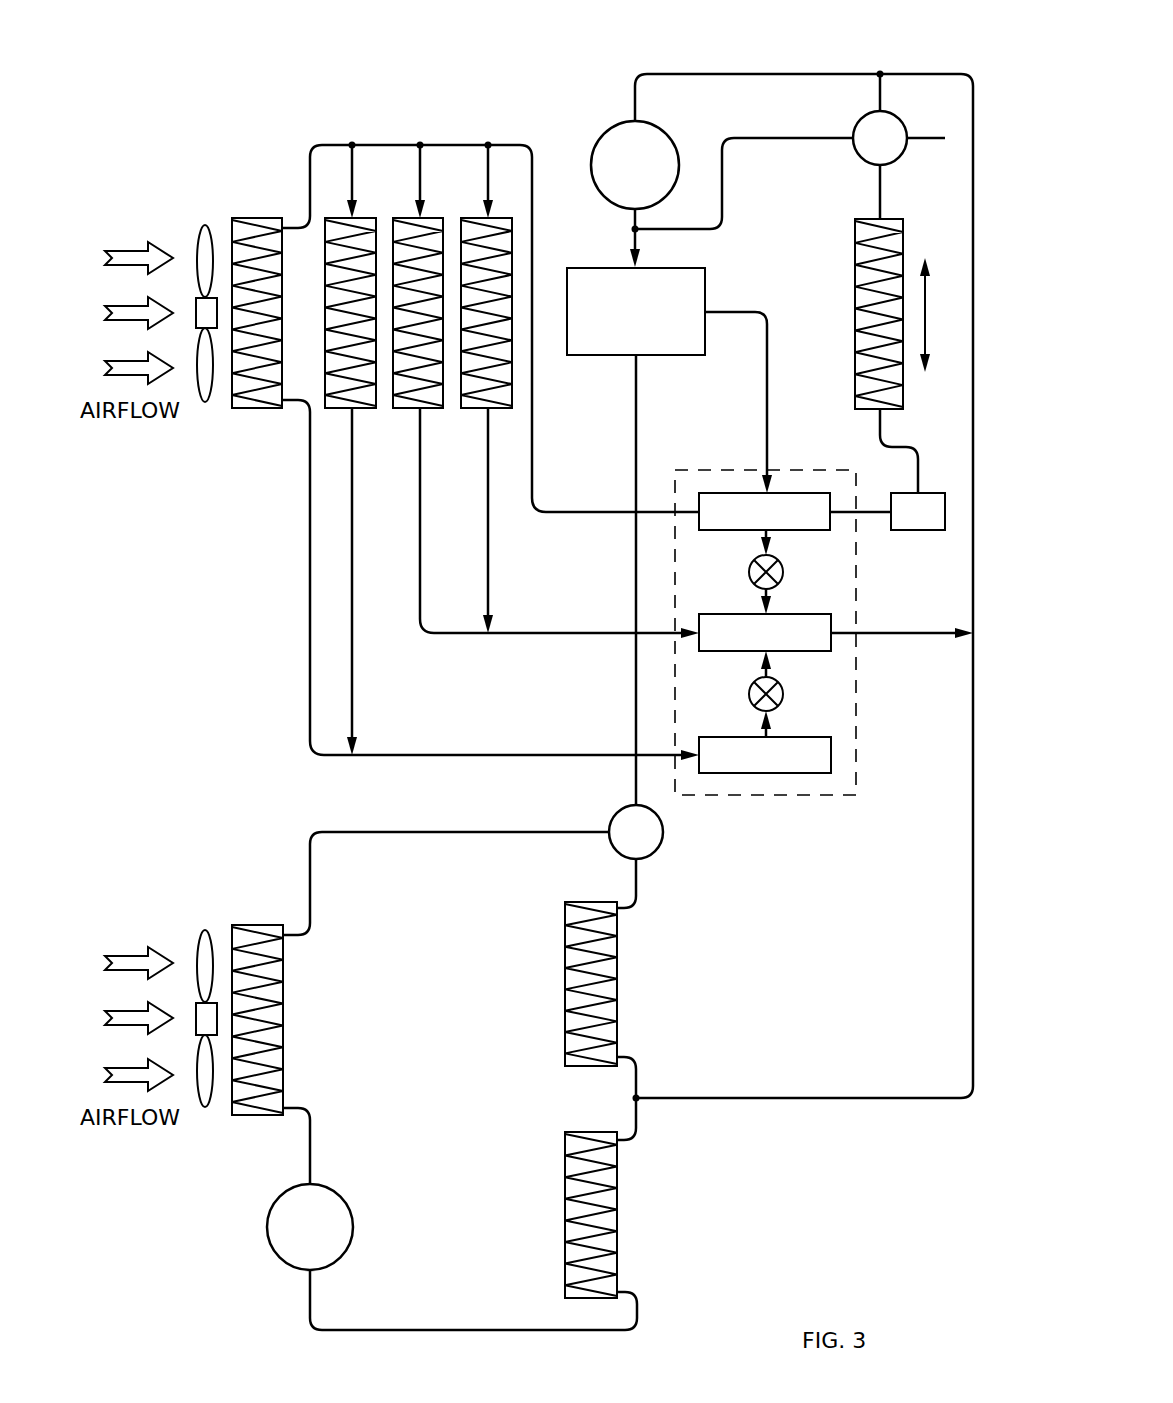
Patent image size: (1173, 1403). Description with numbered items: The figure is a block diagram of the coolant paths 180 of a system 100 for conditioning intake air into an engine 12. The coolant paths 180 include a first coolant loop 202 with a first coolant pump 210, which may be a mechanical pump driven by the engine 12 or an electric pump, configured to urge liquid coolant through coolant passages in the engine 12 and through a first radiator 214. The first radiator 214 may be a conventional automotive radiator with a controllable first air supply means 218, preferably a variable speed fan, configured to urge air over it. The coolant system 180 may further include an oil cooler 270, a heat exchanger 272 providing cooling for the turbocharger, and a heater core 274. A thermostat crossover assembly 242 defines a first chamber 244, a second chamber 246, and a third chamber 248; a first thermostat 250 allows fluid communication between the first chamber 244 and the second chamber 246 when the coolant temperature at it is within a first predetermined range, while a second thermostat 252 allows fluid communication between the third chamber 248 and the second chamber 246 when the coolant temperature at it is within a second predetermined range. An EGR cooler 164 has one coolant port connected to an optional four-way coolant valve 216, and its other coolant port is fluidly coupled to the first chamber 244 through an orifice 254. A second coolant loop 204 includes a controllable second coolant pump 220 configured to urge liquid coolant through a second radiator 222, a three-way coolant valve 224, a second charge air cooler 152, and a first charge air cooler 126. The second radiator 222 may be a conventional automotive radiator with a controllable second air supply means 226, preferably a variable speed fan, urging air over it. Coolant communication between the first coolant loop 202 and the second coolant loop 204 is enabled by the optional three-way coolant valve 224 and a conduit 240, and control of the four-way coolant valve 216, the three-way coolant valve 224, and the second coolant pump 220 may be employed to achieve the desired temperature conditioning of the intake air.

The engine 12 is at (588, 268).
The system for conditioning intake air 100 is at (308, 60).
The first charge air cooler 126 is at (618, 1272).
The second charge air cooler 152 is at (565, 905).
The EGR cooler 164 is at (852, 263).
The coolant paths 180 is at (256, 102).
The first coolant loop 202 is at (714, 74).
The second coolant loop 204 is at (370, 1331).
The first coolant pump 210 is at (612, 128).
The first radiator 214 is at (237, 218).
The four-way coolant valve 216 is at (861, 118).
The first air supply means 218 is at (200, 240).
The second coolant pump 220 is at (277, 1258).
The second radiator 222 is at (235, 925).
The three-way coolant valve 224 is at (657, 853).
The second air supply means 226 is at (202, 945).
The conduit 240 is at (812, 1100).
The thermostat crossover assembly 242 is at (812, 795).
The first chamber 244 is at (805, 493).
The second chamber 246 is at (815, 614).
The third chamber 248 is at (815, 737).
The first thermostat 250 is at (783, 572).
The second thermostat 252 is at (783, 694).
The orifice 254 is at (930, 493).
The oil cooler 270 is at (366, 218).
The heat exchanger 272 is at (434, 218).
The heater core 274 is at (502, 218).